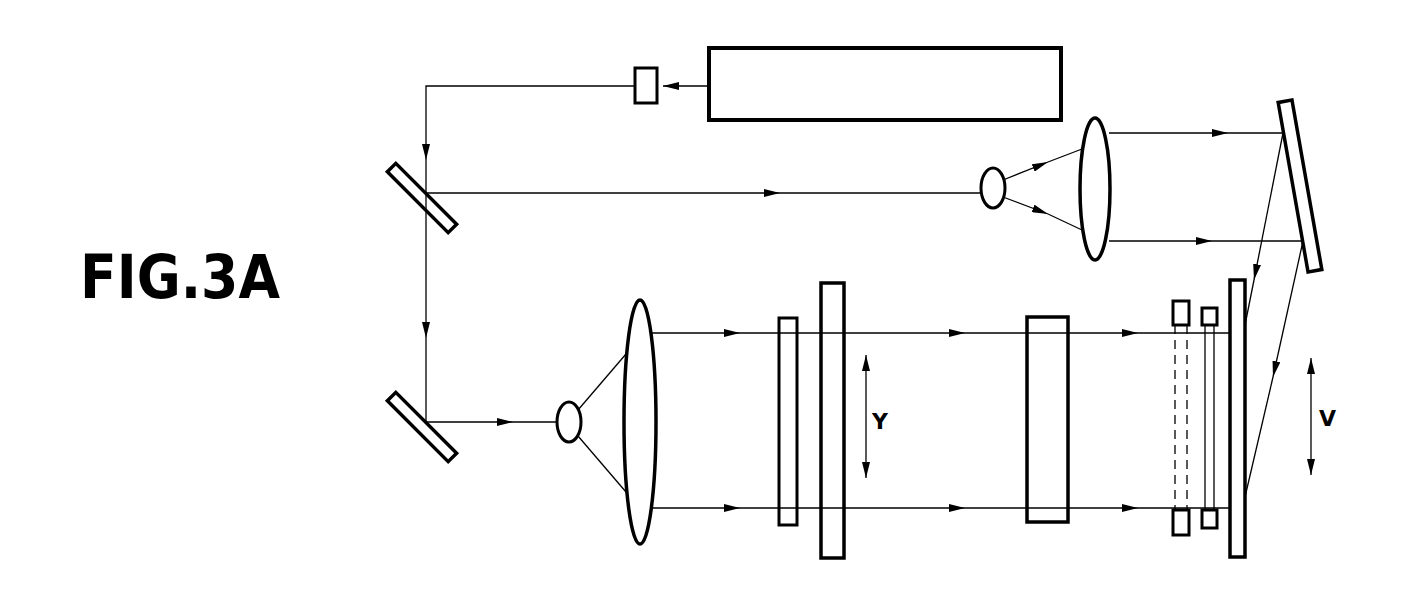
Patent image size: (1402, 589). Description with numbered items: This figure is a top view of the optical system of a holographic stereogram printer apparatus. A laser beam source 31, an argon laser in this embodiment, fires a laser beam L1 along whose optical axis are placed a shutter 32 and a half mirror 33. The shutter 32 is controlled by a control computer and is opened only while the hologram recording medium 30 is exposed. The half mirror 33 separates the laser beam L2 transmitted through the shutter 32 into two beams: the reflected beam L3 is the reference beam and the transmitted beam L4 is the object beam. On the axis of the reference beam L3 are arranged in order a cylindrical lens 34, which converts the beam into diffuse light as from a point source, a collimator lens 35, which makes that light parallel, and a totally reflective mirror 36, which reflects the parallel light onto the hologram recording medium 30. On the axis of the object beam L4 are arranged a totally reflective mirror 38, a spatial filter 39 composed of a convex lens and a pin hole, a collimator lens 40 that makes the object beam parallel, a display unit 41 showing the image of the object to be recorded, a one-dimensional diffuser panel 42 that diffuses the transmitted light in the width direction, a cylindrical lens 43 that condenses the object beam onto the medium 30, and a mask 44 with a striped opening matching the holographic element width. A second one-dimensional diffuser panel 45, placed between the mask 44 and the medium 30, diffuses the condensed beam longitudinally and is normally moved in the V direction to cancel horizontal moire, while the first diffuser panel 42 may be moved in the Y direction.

The hologram recording medium 30 is at (1240, 297).
The laser beam source 31 is at (798, 121).
The shutter 32 is at (645, 99).
The half mirror 33 is at (395, 183).
The cylindrical lens 34 is at (990, 182).
The collimator lens 35 is at (1097, 133).
The totally reflective mirror 36 is at (1297, 165).
The totally reflective mirror 38 is at (400, 412).
The spatial filter 39 is at (570, 413).
The collimator lens 40 is at (640, 313).
The display unit 41 is at (787, 325).
The one-dimensional diffuser panel 42 is at (835, 310).
The cylindrical lens 43 is at (1048, 322).
The mask 44 is at (1183, 526).
The one-dimensional diffuser panel 45 is at (1210, 520).
The laser beam L1 is at (690, 95).
The laser beam L2 is at (427, 112).
The reference beam L3 is at (548, 193).
The object beam L4 is at (427, 288).